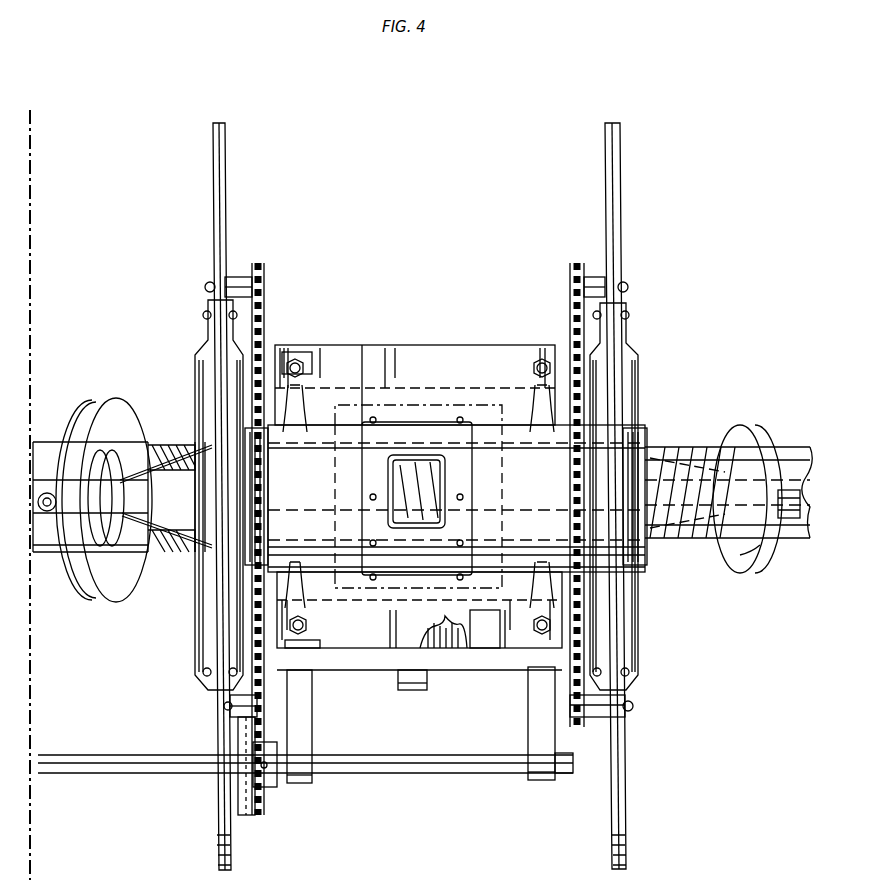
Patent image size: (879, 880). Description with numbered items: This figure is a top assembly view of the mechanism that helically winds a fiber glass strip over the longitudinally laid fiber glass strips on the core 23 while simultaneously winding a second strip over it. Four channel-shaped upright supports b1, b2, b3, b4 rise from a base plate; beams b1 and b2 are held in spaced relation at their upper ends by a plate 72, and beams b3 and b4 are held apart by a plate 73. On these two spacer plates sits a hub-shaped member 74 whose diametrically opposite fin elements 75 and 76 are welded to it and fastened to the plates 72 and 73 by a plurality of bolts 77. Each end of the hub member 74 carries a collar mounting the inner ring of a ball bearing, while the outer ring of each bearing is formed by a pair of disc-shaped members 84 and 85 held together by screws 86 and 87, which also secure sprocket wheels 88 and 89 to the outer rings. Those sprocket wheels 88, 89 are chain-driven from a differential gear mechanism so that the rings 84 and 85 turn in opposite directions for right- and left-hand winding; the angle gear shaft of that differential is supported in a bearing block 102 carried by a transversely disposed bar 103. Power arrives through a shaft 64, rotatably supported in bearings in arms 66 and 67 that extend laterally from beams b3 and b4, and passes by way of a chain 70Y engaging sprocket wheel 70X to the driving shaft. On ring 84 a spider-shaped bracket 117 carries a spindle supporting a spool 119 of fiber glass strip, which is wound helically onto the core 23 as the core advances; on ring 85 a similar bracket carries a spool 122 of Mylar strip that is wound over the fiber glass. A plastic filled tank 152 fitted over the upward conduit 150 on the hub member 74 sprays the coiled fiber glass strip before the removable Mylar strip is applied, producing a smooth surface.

The disc-shaped member 84 is at (222, 158).
The disc-shaped member 85 is at (608, 166).
The sprocket wheel 88 is at (262, 272).
The sprocket wheel 89 is at (572, 270).
The upright support b1 is at (303, 345).
The upright support b2 is at (528, 350).
The upright support b3 is at (509, 650).
The upright support b4 is at (322, 650).
The bolt 77 is at (301, 366).
The fin element 75 is at (356, 362).
The plate 72 is at (437, 368).
The spool 119 is at (95, 406).
The spider-shaped bracket 117 is at (118, 393).
The plastic filled tank 152 is at (334, 480).
The conduit 150 is at (446, 488).
The spool 122 is at (736, 575).
The core 23 is at (812, 548).
The hub-shaped member 74 is at (320, 562).
The screw 86 is at (222, 706).
The chain 70Y is at (242, 728).
The shaft 64 is at (95, 776).
The sprocket wheel 70X is at (255, 802).
The arm 66 is at (305, 783).
The fin element 76 is at (368, 672).
The bearing block 102 is at (411, 690).
The plate 73 is at (464, 650).
The transversely disposed bar 103 is at (482, 660).
The arm 67 is at (538, 782).
The screw 87 is at (633, 706).